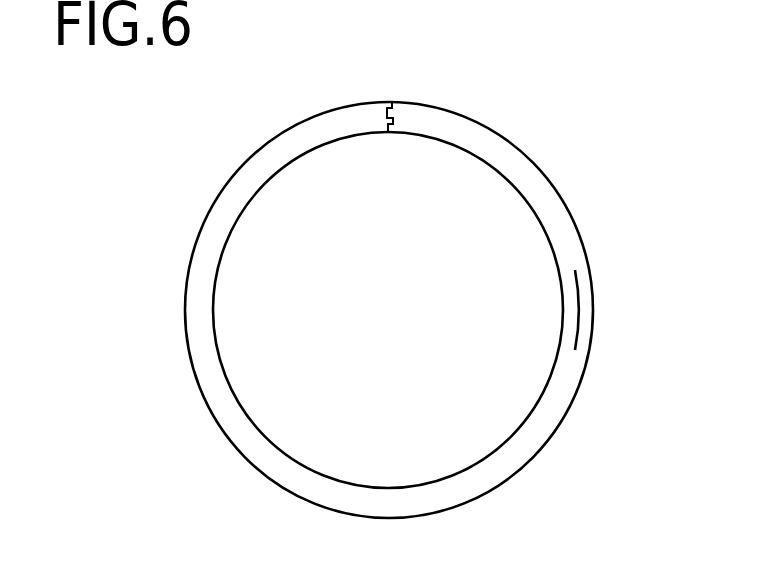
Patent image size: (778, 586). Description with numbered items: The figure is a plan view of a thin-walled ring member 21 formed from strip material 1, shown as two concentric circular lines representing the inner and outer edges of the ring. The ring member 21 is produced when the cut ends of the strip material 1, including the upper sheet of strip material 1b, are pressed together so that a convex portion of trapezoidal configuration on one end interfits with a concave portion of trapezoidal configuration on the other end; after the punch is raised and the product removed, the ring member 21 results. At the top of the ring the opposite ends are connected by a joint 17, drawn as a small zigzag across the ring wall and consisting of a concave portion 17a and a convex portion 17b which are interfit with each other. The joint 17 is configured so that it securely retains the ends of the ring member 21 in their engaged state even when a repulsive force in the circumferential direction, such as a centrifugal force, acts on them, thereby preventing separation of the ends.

The strip material 1 is at (574, 417).
The upper sheet of strip material 1b is at (580, 329).
The thin-walled ring member 21 is at (578, 206).
The joint 17 is at (392, 136).
The concave portion 17a is at (387, 113).
The convex portion 17b is at (395, 115).